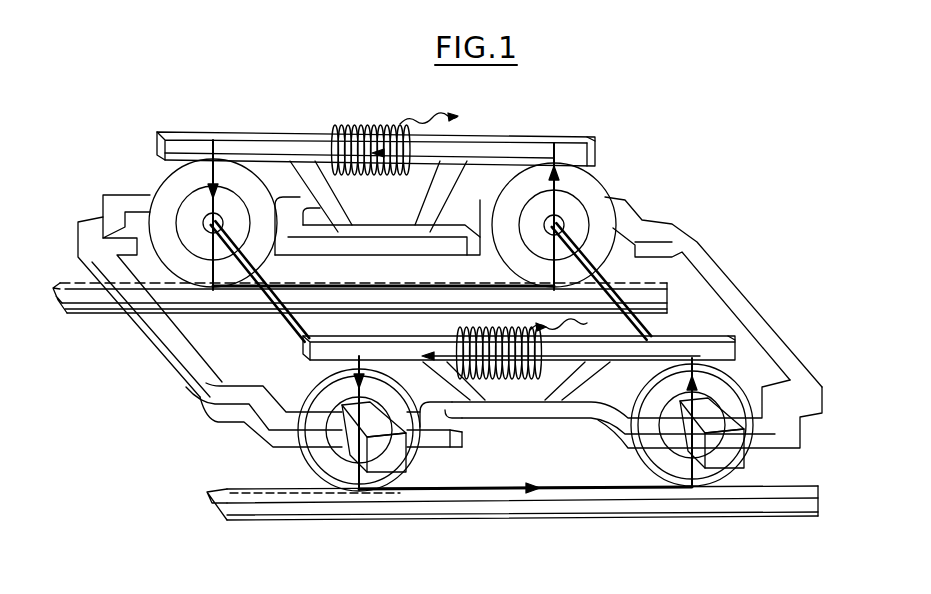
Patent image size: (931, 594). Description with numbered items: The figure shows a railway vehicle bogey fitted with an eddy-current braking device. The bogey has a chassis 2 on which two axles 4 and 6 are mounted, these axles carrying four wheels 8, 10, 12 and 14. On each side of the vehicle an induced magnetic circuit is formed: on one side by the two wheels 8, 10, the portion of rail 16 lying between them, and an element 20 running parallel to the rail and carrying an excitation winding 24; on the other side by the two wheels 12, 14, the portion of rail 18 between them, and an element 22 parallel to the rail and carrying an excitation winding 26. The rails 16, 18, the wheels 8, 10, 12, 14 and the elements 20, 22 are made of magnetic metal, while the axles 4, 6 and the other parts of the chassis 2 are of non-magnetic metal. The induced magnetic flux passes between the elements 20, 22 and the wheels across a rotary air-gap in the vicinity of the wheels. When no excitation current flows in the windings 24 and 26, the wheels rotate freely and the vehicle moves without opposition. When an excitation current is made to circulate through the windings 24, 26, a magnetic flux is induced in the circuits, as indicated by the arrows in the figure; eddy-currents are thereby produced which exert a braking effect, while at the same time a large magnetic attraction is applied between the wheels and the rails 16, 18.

The chassis 2 is at (165, 382).
The axle 4 is at (290, 323).
The axle 6 is at (670, 260).
The wheel 8 is at (327, 463).
The wheel 10 is at (663, 461).
The wheel 12 is at (573, 207).
The wheel 14 is at (201, 197).
The rail 16 is at (453, 502).
The rail 18 is at (365, 257).
The element 20 is at (742, 340).
The element 22 is at (497, 152).
The excitation winding 24 is at (545, 403).
The excitation winding 26 is at (368, 124).